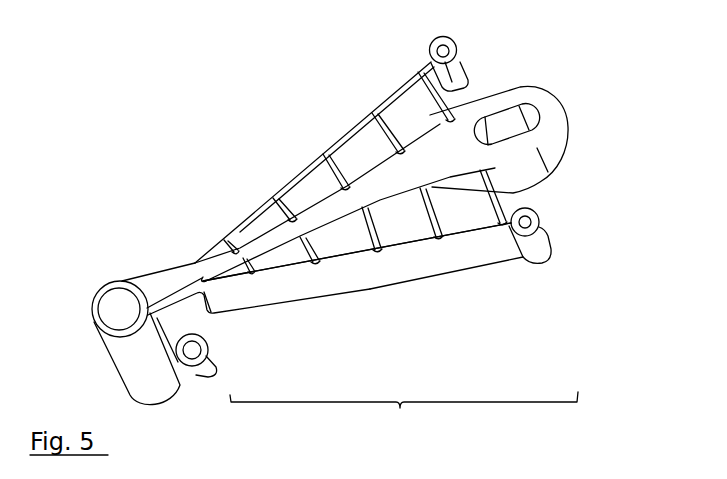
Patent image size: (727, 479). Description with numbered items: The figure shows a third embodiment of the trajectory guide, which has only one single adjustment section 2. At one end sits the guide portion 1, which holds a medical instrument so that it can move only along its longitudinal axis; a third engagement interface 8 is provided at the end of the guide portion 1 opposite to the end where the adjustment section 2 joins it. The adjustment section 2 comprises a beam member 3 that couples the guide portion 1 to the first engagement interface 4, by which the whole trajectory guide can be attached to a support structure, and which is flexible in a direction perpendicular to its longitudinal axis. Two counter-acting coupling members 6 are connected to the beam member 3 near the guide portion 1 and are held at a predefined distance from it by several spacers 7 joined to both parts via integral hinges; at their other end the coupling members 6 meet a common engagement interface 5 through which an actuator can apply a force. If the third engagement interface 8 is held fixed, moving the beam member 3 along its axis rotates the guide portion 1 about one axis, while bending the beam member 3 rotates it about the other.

The guide portion 1 is at (143, 362).
The adjustment section 2 is at (390, 334).
The beam member 3 is at (380, 188).
The first engagement interface 4 is at (506, 127).
The common engagement interface 5 is at (443, 50).
The counter-acting coupling member 6 is at (417, 99).
The spacer 7 is at (290, 212).
The third engagement interface 8 is at (192, 352).